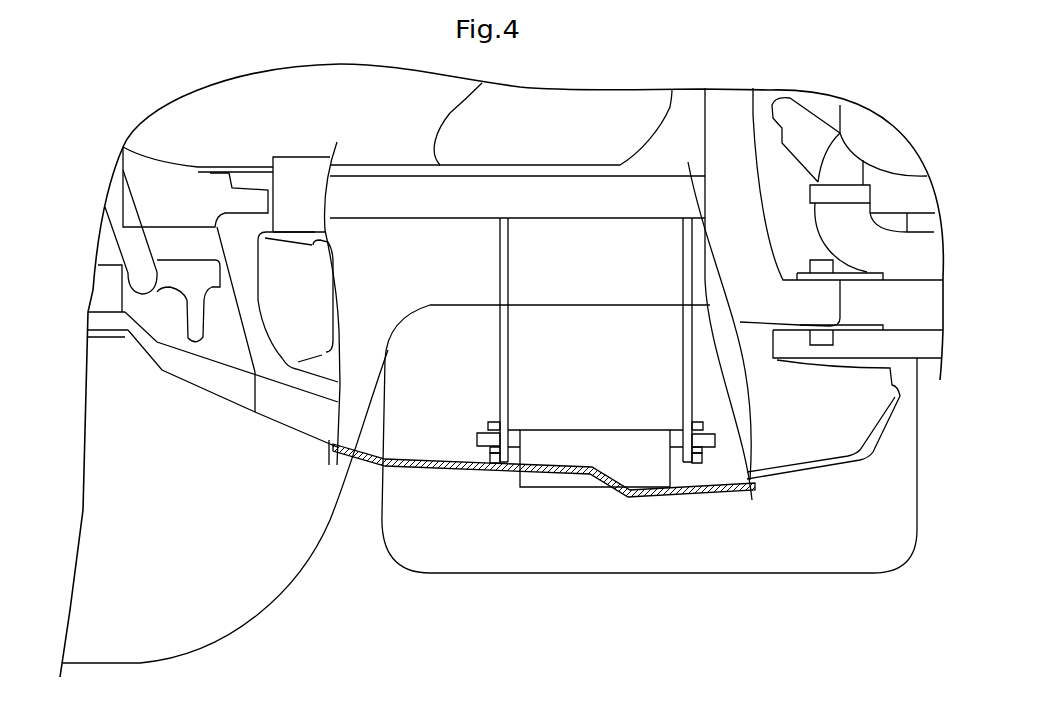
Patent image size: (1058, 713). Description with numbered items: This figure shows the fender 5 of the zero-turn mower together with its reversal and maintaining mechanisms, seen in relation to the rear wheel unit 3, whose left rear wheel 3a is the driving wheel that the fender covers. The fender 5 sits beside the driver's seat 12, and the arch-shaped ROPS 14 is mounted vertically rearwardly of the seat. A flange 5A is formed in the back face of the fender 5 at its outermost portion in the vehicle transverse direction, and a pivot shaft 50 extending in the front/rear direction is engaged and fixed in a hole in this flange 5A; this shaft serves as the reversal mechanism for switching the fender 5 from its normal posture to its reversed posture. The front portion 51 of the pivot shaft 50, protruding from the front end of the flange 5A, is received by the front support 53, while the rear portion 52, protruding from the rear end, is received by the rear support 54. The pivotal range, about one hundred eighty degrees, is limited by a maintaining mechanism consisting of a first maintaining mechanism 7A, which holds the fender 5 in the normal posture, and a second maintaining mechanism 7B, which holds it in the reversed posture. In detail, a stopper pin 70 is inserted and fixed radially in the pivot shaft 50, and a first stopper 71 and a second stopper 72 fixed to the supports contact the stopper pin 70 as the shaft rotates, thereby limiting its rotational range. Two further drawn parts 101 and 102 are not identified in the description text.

The rear wheel unit 3 is at (649, 477).
The left rear wheel 3a is at (608, 553).
The fender 5 is at (310, 422).
The flange 5A is at (595, 445).
The first maintaining mechanism 7A is at (596, 495).
The second maintaining mechanism 7B is at (606, 395).
The driver's seat 12 is at (365, 125).
The ROPS 14 is at (733, 247).
The pivot shaft 50 is at (515, 436).
The front portion of the pivot shaft 51 is at (486, 440).
The rear portion of the pivot shaft 52 is at (714, 436).
The front support 53 is at (505, 357).
The rear support 54 is at (686, 357).
The stopper pin 70 is at (490, 451).
The first stopper 71 is at (494, 465).
The second stopper 72 is at (492, 421).
The front door 101 is at (177, 243).
The rear door 102 is at (857, 343).